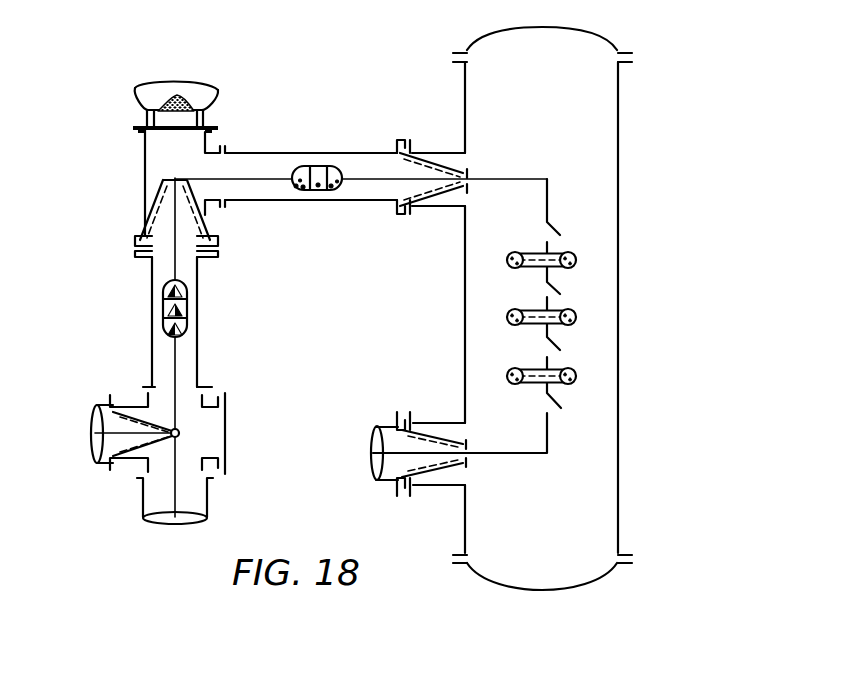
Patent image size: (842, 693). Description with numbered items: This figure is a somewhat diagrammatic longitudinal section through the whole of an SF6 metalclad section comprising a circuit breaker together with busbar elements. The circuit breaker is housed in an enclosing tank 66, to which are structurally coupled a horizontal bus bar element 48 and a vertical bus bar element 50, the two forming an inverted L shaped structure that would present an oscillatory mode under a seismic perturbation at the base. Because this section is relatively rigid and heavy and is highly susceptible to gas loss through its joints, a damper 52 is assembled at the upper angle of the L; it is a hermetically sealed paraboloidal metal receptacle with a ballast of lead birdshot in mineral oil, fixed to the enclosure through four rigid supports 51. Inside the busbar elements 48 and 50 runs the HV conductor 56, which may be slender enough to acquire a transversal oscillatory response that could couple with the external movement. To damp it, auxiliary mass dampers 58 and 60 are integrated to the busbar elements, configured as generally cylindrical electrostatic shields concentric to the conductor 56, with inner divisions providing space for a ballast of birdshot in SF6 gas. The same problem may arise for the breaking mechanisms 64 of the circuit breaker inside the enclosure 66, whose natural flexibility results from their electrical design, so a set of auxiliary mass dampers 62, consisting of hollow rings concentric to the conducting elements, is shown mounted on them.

The horizontal bus bar element 48 is at (296, 150).
The vertical bus bar element 50 is at (149, 316).
The rigid supports 51 is at (210, 117).
The damper 52 is at (135, 97).
The HV conductor 56 is at (382, 184).
The auxiliary mass damper 58 is at (188, 308).
The auxiliary mass damper 60 is at (318, 191).
The auxiliary mass dampers 62 is at (582, 258).
The breaking mechanisms 64 is at (559, 229).
The enclosing tank 66 is at (622, 153).